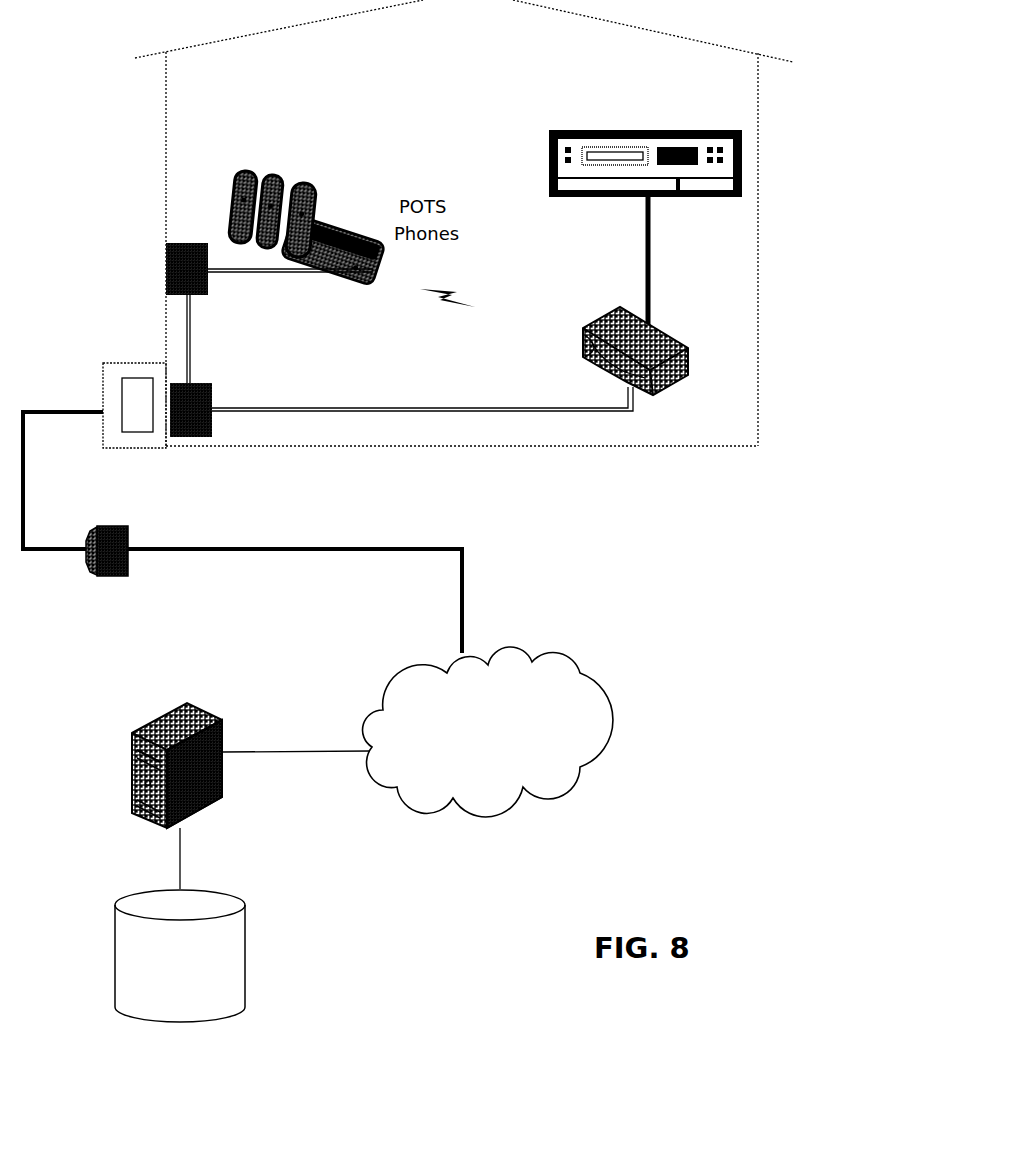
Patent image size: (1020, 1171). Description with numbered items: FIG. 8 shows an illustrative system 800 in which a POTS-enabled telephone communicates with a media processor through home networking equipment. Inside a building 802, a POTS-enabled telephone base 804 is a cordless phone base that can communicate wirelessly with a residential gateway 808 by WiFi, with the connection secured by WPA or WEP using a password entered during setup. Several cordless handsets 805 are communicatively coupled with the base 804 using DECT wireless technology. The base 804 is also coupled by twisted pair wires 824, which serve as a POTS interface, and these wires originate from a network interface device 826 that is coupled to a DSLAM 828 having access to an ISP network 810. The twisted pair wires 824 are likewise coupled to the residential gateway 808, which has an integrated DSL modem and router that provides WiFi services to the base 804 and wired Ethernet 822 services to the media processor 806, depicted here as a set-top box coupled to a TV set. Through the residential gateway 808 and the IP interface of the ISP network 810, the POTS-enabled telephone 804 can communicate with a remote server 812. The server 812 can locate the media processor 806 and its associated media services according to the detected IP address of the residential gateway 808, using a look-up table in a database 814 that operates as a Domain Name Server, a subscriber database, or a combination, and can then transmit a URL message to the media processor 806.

The communication system 800 is at (663, 926).
The building 802 is at (221, 84).
The POTS-enabled telephone 804 is at (347, 222).
The cordless handsets 805 is at (265, 154).
The media processor 806 is at (549, 146).
The residential gateway 808 is at (598, 318).
The ISP network 810 is at (508, 782).
The server 812 is at (150, 722).
The database 814 is at (246, 948).
The wired Ethernet 822 is at (645, 275).
The twisted pair wires 824 is at (194, 353).
The network interface device 826 is at (132, 368).
The DSLAM 828 is at (113, 523).